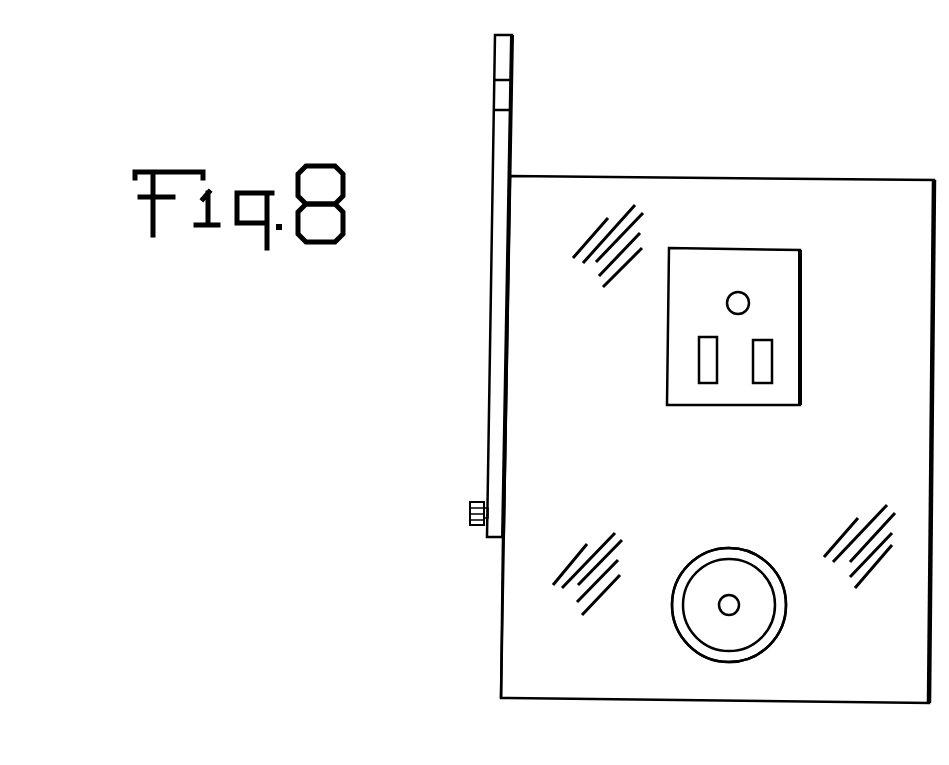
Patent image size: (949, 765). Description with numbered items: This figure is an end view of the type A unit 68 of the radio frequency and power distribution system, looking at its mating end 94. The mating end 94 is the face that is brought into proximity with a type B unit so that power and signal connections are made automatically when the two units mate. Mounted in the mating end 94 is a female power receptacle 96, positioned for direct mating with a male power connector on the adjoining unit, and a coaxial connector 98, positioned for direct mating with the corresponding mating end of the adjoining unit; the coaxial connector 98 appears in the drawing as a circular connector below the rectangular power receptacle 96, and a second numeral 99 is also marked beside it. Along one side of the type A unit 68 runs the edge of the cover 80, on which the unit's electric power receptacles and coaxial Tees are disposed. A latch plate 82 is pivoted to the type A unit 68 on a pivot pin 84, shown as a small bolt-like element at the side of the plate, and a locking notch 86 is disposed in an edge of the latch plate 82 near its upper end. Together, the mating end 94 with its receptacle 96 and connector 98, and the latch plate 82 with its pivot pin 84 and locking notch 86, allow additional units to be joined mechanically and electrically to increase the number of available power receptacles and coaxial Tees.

The type A unit 68 is at (757, 187).
The mating end 94 is at (897, 188).
The cover 80 is at (500, 613).
The latch plate 82 is at (498, 171).
The locking notch 86 is at (505, 90).
The pivot pin 84 is at (468, 513).
The female power receptacle 96 is at (789, 305).
The round receptacle 99 is at (744, 570).
The coaxial connector 98 is at (797, 479).